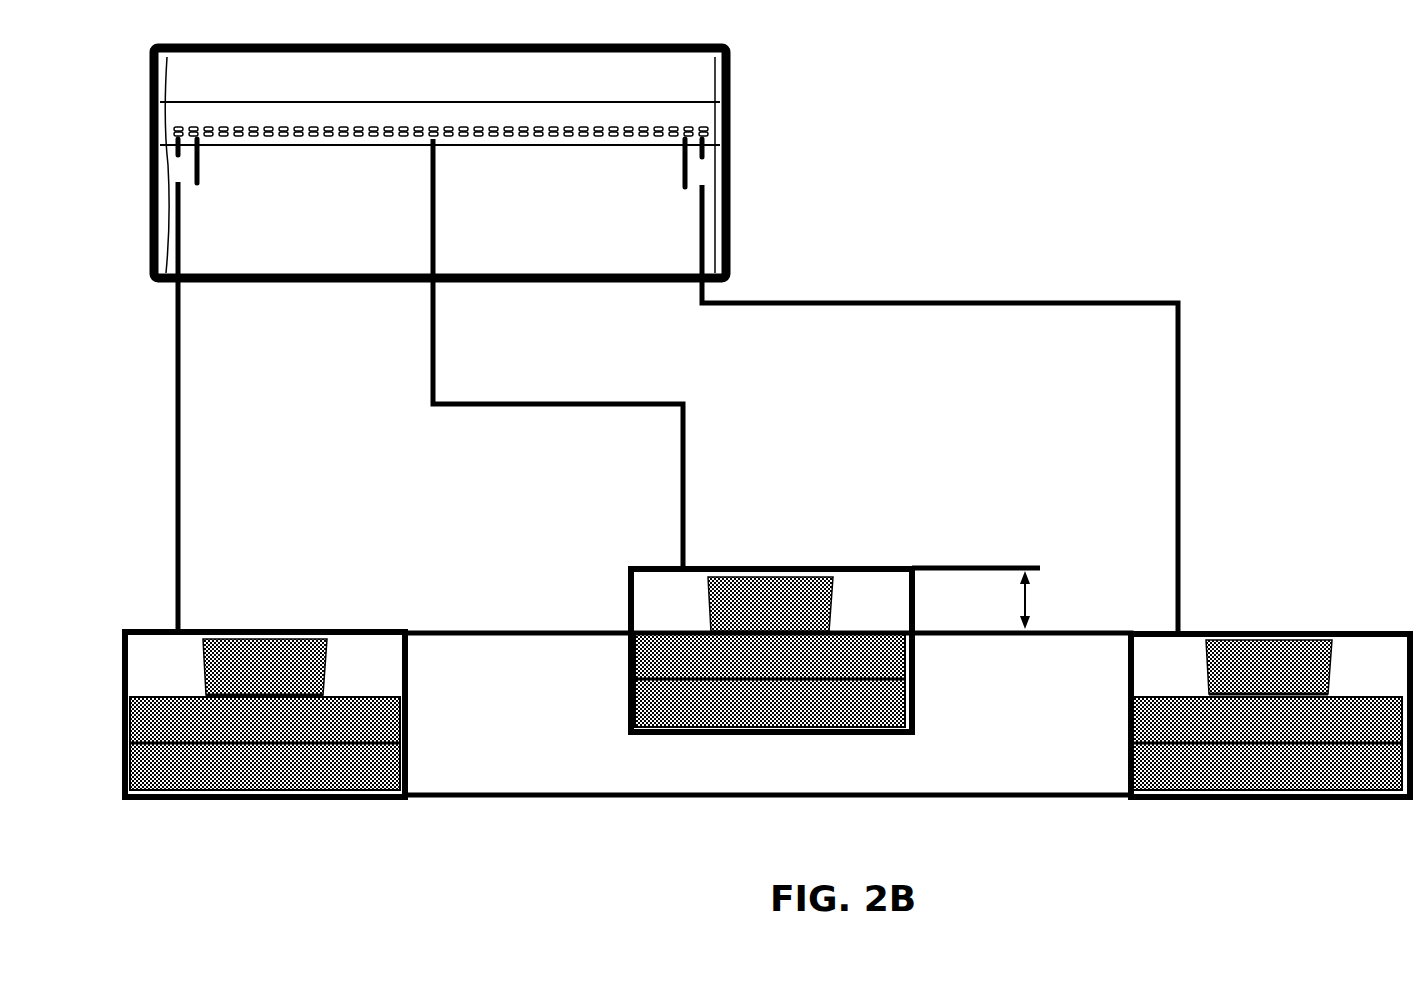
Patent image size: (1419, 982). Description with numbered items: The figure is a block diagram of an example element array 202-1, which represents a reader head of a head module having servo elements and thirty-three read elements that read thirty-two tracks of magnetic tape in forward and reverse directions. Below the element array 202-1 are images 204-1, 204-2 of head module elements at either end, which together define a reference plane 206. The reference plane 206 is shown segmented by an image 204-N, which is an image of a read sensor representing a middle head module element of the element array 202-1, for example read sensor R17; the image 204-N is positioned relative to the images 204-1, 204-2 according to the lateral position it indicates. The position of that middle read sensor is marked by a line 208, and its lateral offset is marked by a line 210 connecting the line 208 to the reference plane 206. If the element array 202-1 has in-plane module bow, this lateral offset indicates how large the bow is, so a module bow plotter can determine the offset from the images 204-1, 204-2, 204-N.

The element array 202-1 is at (372, 44).
The image 204-1 is at (303, 629).
The image 204-N is at (743, 566).
The image 204-2 is at (1253, 628).
The reference plane 206 is at (550, 640).
The line 208 is at (932, 566).
The line 210 is at (1027, 603).